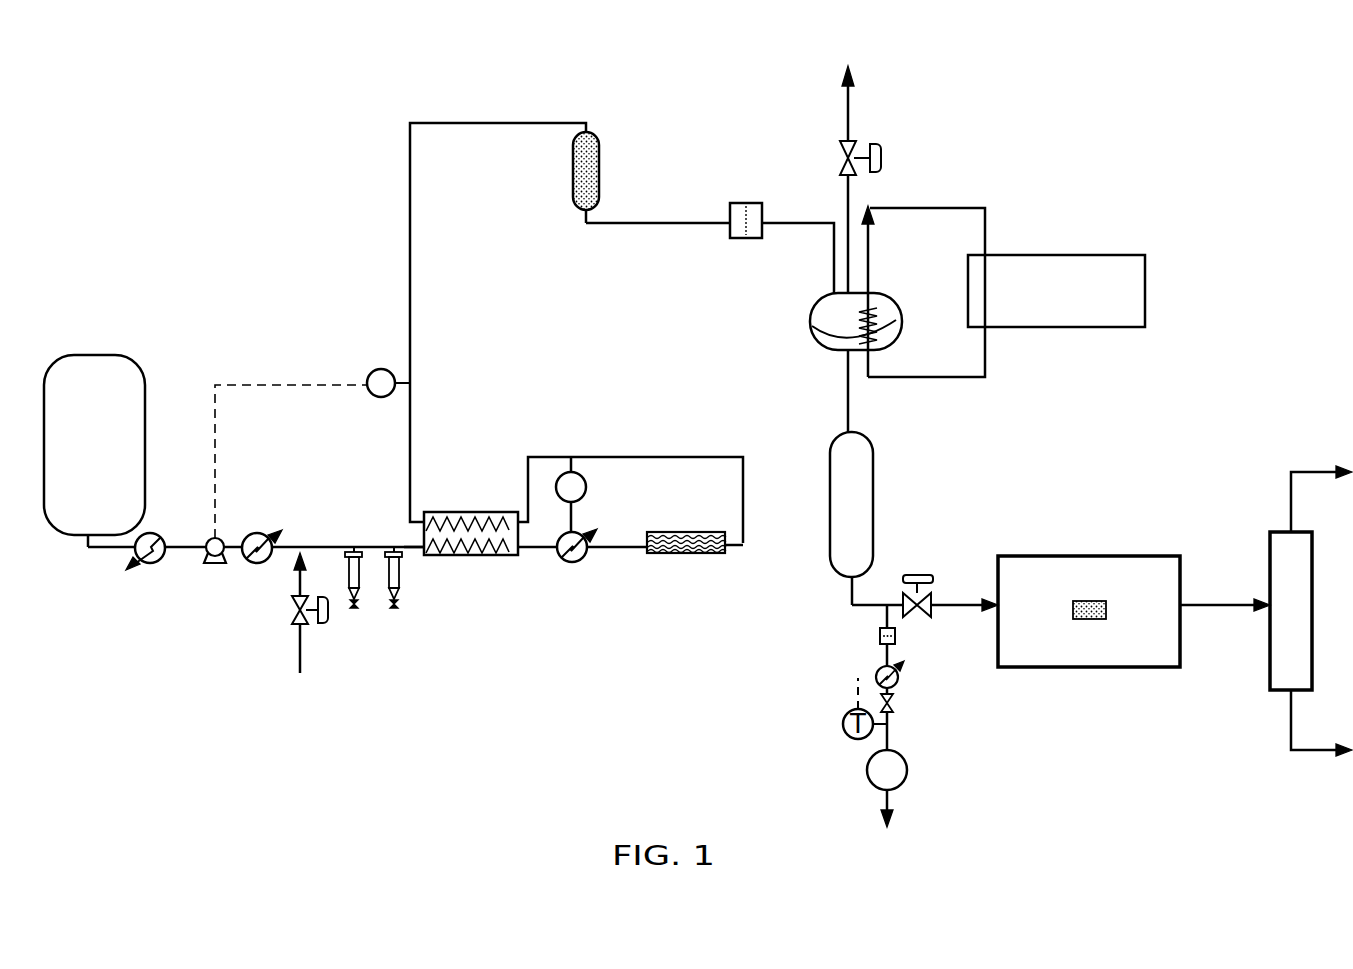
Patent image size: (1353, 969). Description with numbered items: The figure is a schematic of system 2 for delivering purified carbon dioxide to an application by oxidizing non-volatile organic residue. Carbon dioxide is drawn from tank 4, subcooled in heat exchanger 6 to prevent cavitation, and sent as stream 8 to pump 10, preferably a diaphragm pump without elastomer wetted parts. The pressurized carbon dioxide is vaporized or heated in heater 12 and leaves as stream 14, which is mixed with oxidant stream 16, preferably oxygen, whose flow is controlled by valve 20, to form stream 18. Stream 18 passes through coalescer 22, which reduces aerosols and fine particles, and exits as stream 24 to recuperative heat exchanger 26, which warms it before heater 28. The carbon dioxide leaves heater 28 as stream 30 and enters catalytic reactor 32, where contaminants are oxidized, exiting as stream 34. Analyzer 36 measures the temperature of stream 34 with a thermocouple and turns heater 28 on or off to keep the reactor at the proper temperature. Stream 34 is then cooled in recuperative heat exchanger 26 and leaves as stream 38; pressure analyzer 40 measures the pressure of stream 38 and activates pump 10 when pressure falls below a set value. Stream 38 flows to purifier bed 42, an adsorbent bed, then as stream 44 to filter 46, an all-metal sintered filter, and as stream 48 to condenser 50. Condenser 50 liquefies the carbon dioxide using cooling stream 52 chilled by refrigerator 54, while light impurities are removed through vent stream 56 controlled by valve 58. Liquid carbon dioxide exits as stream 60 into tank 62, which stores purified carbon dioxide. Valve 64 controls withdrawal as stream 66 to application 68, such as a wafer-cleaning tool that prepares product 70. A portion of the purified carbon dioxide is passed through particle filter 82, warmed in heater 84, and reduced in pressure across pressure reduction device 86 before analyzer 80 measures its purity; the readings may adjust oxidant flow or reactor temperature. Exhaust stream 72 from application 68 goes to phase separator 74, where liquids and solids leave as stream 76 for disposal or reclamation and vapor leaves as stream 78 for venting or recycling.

The system 2 is at (1205, 102).
The tank 4 is at (85, 460).
The heat exchanger 6 is at (148, 566).
The stream 8 is at (190, 545).
The pump 10 is at (214, 566).
The heater 12 is at (258, 532).
The stream 14 is at (290, 545).
The oxidant stream 16 is at (299, 574).
The stream 18 is at (328, 545).
The valve 20 is at (296, 622).
The coalescer 22 is at (391, 594).
The stream 24 is at (414, 553).
The recuperative heat exchanger 26 is at (477, 557).
The heater 28 is at (572, 563).
The stream 30 is at (622, 550).
The catalytic reactor 32 is at (688, 555).
The stream 34 is at (742, 550).
The analyzer 36 is at (587, 486).
The stream 38 is at (412, 345).
The pressure analyzer 40 is at (371, 372).
The purifier bed 42 is at (572, 168).
The stream 44 is at (633, 226).
The filter 46 is at (730, 212).
The stream 48 is at (834, 250).
The condenser 50 is at (810, 318).
The cooling stream 52 is at (951, 379).
The refrigerator 54 is at (1042, 304).
The vent stream 56 is at (848, 110).
The valve 58 is at (882, 158).
The stream 60 is at (848, 395).
The tank 62 is at (838, 512).
The valve 64 is at (920, 612).
The stream 66 is at (963, 604).
The application 68 is at (1120, 668).
The product 70 is at (1108, 605).
The exhaust stream 72 is at (1222, 604).
The phase separator 74 is at (1277, 623).
The stream 76 is at (1318, 752).
The stream 78 is at (1320, 470).
The analyzer 80 is at (905, 785).
The particle filter 82 is at (880, 637).
The heater 84 is at (898, 685).
The pressure reduction device 86 is at (893, 709).